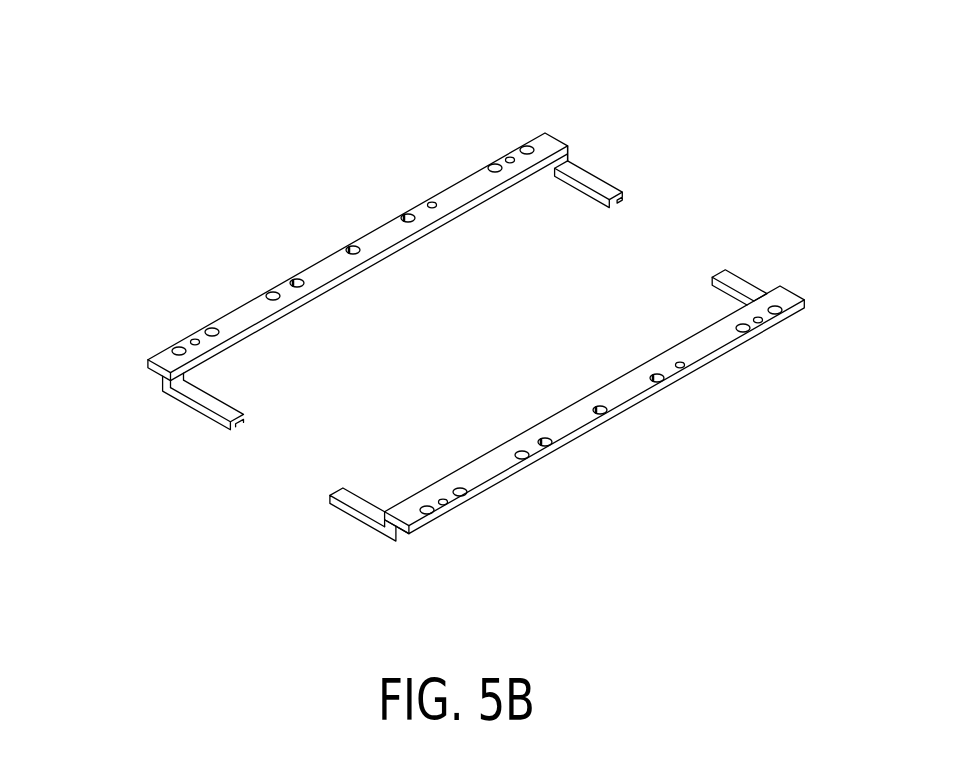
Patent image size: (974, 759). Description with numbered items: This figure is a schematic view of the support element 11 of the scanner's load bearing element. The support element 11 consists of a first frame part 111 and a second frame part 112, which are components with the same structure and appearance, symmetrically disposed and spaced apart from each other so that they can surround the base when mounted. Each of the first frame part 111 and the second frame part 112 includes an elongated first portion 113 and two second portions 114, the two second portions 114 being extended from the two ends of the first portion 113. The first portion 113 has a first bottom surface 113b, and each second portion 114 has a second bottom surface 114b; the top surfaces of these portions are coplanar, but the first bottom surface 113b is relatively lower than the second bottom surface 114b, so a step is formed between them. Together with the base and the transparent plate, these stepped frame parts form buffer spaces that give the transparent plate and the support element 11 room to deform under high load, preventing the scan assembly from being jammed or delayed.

The support element 11 is at (843, 38).
The first frame part 111 is at (241, 268).
The second frame part 112 is at (610, 457).
The first portion 113 is at (523, 183).
The first bottom surface 113b is at (165, 362).
The second portion 114 is at (722, 267).
The second bottom surface 114b is at (590, 178).